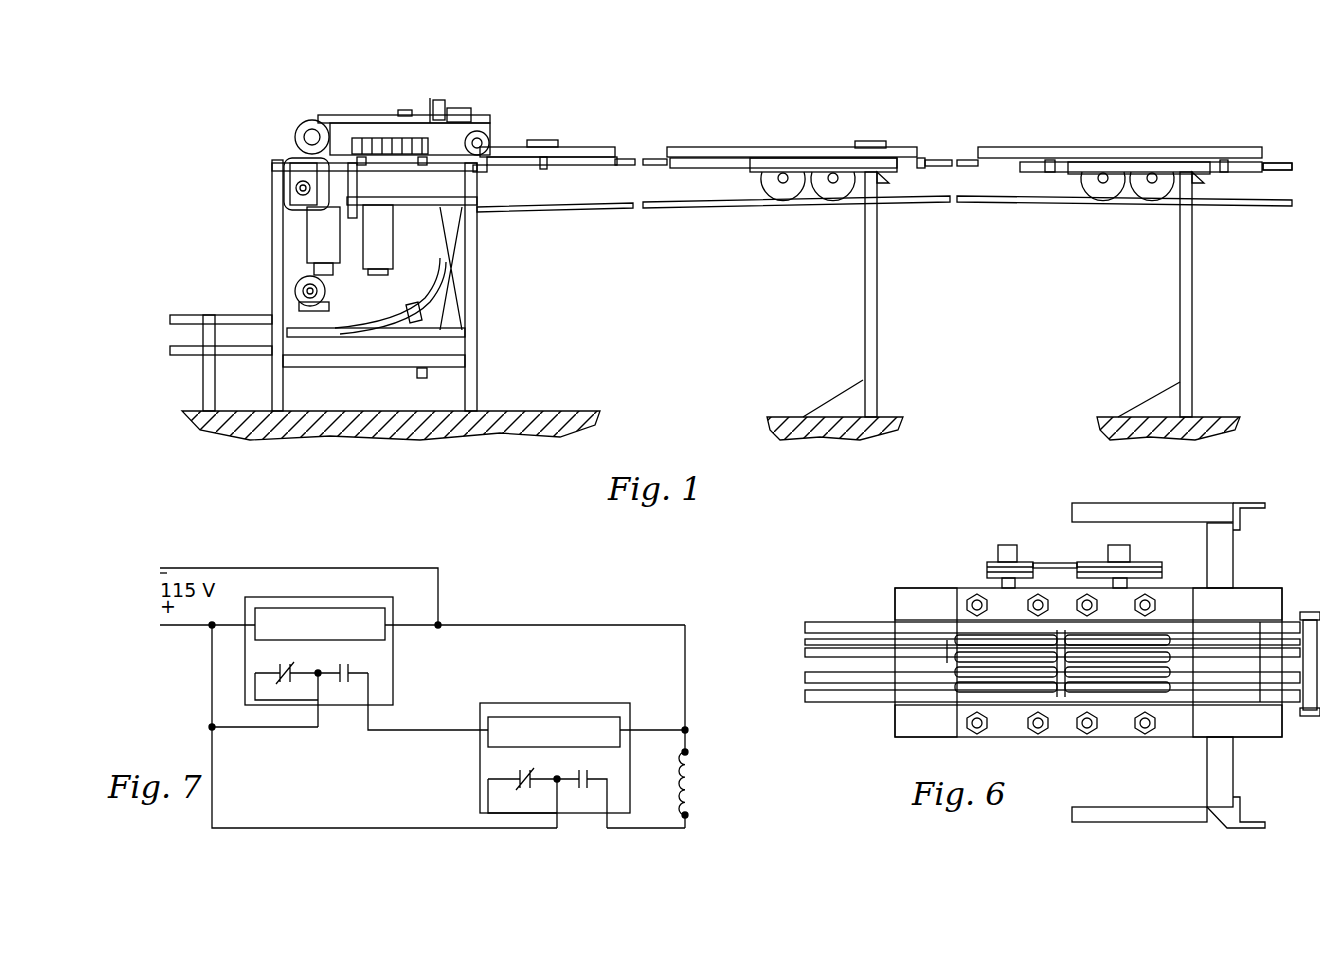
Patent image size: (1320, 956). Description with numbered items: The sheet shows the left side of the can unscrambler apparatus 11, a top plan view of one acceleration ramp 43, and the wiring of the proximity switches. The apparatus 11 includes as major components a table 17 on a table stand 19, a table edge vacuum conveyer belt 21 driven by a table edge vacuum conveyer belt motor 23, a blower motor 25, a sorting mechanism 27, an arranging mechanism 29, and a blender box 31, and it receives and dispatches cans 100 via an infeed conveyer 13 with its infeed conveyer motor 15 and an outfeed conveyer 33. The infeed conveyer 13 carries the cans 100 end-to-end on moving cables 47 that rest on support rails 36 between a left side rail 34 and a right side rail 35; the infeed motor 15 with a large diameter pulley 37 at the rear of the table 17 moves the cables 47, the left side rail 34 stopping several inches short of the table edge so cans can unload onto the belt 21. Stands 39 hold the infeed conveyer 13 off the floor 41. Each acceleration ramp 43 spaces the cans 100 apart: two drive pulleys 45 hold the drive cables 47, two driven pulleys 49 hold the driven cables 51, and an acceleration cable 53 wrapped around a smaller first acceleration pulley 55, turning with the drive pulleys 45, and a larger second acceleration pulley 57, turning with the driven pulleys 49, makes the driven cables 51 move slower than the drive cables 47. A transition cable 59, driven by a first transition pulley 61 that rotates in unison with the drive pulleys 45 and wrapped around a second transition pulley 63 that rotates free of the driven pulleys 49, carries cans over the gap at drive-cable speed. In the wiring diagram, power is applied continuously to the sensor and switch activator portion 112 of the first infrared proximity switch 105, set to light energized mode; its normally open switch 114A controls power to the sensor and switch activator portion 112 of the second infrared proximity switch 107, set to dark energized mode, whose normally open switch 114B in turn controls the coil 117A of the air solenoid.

In FIG. 1, the can unscrambler apparatus 11 is at (395, 68).
In FIG. 1, the infeed conveyer 13 is at (600, 147).
In FIG. 6, the infeed conveyer 13 is at (870, 700).
In FIG. 1, the infeed conveyer motor 15 is at (302, 236).
In FIG. 1, the table 17 is at (380, 142).
In FIG. 1, the table stand 19 is at (470, 340).
In FIG. 1, the table edge vacuum conveyer belt 21 is at (372, 137).
In FIG. 1, the table edge vacuum conveyer belt motor 23 is at (300, 130).
In FIG. 1, the blower motor 25 is at (395, 243).
In FIG. 1, the sorting mechanism 27 is at (490, 112).
In FIG. 1, the arranging mechanism 29 is at (425, 270).
In FIG. 1, the blender box 31 is at (437, 348).
In FIG. 1, the outfeed conveyer 33 is at (243, 340).
In FIG. 1, the left side rail 34 is at (748, 147).
In FIG. 6, the left side rail 34 is at (828, 695).
In FIG. 6, the right side rail 35 is at (828, 625).
In FIG. 1, the support rails 36 is at (660, 204).
In FIG. 6, the support rails 36 is at (808, 642).
In FIG. 1, the large diameter pulley 37 is at (292, 163).
In FIG. 1, the stands 39 is at (877, 350).
In FIG. 6, the stands 39 is at (1224, 520).
In FIG. 1, the floor 41 is at (580, 410).
In FIG. 1, the acceleration ramp 43 is at (795, 196).
In FIG. 6, the acceleration ramp 43 is at (960, 690).
In FIG. 6, the drive pulleys 45 is at (960, 638).
In FIG. 1, the moving cables 47 is at (655, 198).
In FIG. 6, the moving cables 47 is at (808, 676).
In FIG. 6, the driven pulleys 49 is at (1162, 640).
In FIG. 1, the driven cables 51 is at (940, 160).
In FIG. 6, the driven cables 51 is at (1260, 650).
In FIG. 6, the acceleration cable 53 is at (1045, 563).
In FIG. 6, the first acceleration pulley 55 is at (995, 562).
In FIG. 6, the second acceleration pulley 57 is at (1097, 563).
In FIG. 6, the transition cable 59 is at (1062, 650).
In FIG. 6, the first transition pulley 61 is at (1050, 700).
In FIG. 6, the second transition pulley 63 is at (1120, 650).
In FIG. 1, the cans 100 is at (538, 140).
In FIG. 7, the first infrared proximity switch 105 is at (393, 660).
In FIG. 7, the second infrared proximity switch 107 is at (612, 703).
In FIG. 7, the sensor and switch activator portion 112 is at (437, 677).
In FIG. 7, the normally open switch 114A is at (316, 671).
In FIG. 7, the normally open switch 114B is at (550, 789).
In FIG. 7, the coil 117A is at (713, 783).